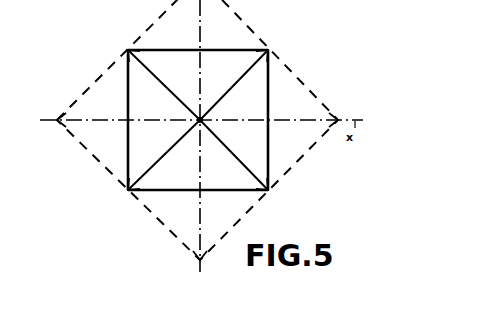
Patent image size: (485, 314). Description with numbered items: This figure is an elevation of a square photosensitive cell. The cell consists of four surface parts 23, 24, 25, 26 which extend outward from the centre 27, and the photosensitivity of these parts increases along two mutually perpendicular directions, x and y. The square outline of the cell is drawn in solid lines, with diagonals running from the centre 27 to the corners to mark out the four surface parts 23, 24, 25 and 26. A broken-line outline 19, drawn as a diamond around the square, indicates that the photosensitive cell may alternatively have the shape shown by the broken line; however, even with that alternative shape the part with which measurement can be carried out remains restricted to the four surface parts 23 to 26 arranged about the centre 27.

The bounding diamond / envelope 19 is at (270, 98).
The surface part 23 is at (262, 153).
The surface part 24 is at (133, 143).
The surface part 25 is at (167, 182).
The surface part 26 is at (158, 60).
The centre 27 is at (197, 130).